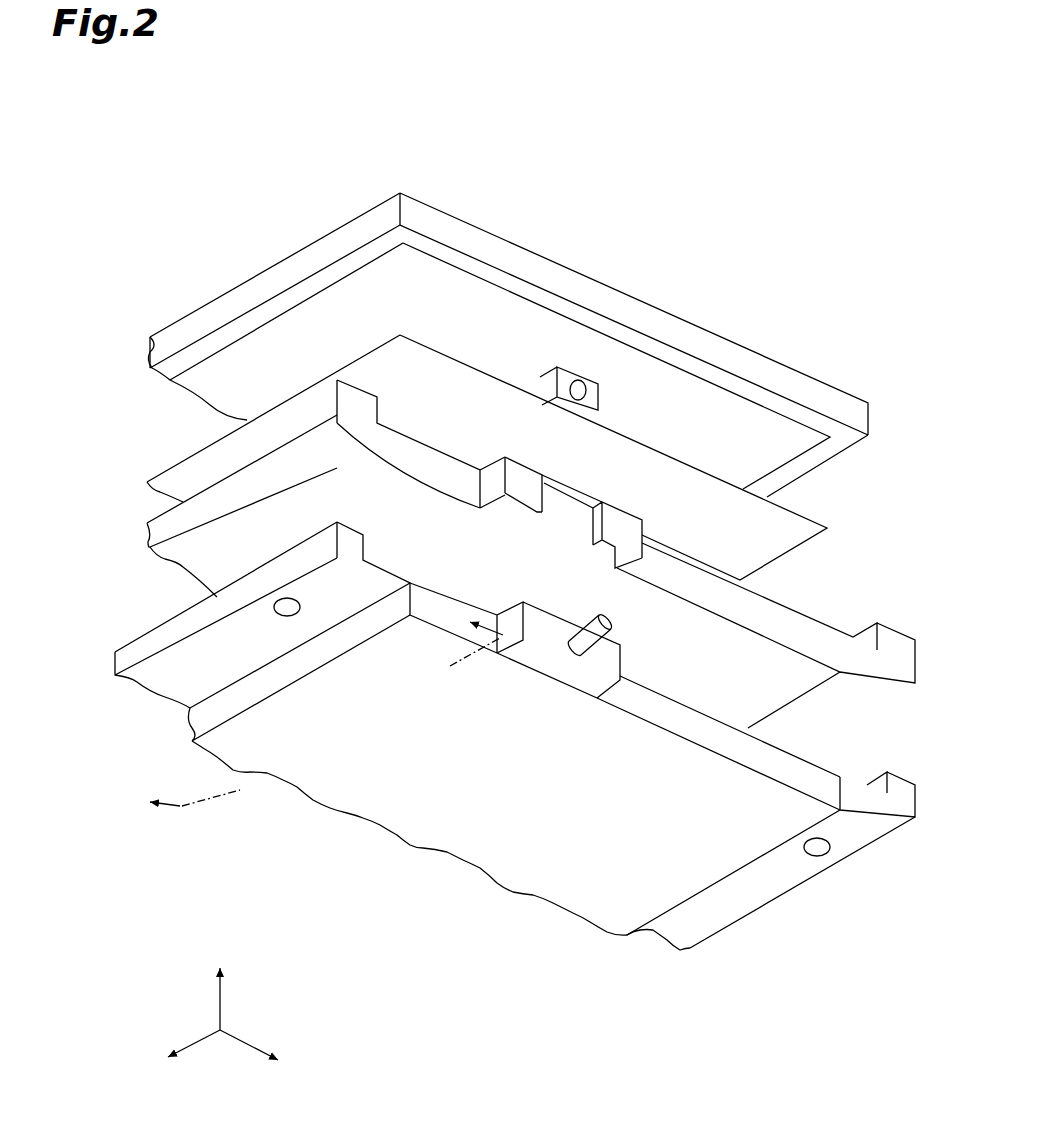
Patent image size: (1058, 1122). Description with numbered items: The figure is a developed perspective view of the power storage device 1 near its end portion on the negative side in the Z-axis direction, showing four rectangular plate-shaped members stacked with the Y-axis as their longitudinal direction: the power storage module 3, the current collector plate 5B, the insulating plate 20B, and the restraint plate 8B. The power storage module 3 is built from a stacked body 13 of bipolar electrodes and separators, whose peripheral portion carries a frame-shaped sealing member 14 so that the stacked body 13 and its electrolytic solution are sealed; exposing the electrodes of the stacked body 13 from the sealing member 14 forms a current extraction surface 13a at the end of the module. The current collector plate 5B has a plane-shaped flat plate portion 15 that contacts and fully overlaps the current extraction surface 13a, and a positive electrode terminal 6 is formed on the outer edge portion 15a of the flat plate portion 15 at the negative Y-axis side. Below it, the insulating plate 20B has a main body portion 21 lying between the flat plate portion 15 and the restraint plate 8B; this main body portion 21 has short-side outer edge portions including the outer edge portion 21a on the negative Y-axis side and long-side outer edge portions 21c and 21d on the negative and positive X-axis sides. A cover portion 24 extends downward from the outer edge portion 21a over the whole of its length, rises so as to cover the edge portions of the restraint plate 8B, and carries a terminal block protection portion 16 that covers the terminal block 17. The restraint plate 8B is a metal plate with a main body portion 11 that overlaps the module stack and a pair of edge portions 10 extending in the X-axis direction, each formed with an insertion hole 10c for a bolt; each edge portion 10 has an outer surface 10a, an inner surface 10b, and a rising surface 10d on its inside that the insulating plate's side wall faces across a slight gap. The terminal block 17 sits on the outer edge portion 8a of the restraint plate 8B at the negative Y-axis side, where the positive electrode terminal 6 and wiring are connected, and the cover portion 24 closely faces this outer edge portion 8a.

The power storage device 1 is at (200, 172).
The power storage module 3 is at (524, 345).
The stacked body 13 is at (355, 308).
The current extraction surface 13a is at (650, 390).
The sealing member 14 is at (800, 368).
The current collector plate 5B is at (180, 440).
The positive electrode terminal 6 is at (540, 362).
The flat plate portion 15 is at (491, 446).
The outer edge portion 15a is at (700, 465).
The terminal block protection portion 16 is at (532, 517).
The terminal block 17 is at (560, 670).
The insulating plate 20B is at (137, 542).
The main body portion 21 is at (488, 554).
The outer edge portion 21a is at (783, 603).
The outer edge portion 21c is at (283, 487).
The outer edge portion 21d is at (783, 715).
The cover portion 24 is at (793, 632).
The outer edge portion 8a is at (800, 770).
The restraint plate 8B is at (182, 727).
The edge portion 10 is at (503, 751).
The outer surface 10a is at (767, 878).
The inner surface 10b is at (905, 772).
The insertion hole 10c is at (287, 615).
The rising surface 10d is at (865, 780).
The main body portion 11 is at (435, 812).